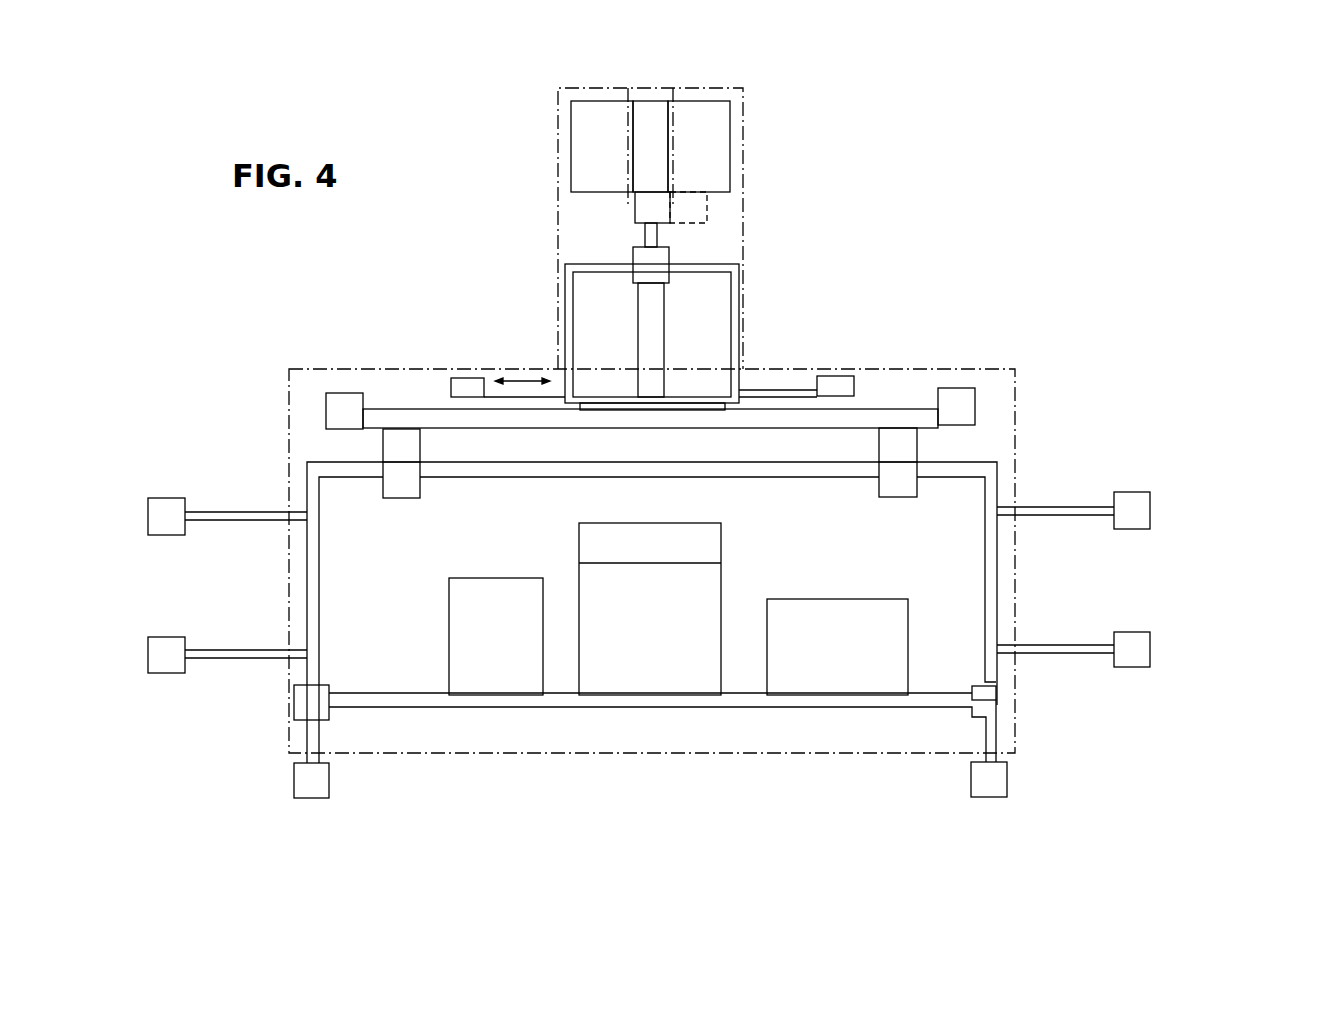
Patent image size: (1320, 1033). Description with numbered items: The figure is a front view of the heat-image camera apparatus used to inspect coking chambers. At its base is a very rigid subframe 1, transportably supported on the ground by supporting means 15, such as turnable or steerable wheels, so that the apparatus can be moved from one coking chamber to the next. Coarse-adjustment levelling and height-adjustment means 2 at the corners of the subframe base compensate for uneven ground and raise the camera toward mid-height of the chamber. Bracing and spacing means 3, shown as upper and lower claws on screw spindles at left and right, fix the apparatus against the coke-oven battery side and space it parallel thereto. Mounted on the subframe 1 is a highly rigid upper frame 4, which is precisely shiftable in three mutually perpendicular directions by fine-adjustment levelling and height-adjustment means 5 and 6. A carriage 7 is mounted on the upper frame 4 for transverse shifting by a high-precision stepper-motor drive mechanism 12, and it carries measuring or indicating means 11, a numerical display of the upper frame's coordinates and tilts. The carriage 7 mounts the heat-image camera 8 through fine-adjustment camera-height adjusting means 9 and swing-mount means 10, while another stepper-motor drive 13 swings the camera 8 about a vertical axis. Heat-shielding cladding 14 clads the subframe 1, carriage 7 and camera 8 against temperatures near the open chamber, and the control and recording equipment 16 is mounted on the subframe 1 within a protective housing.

The subframe 1 is at (988, 587).
The coarse-adjustment levelling and height-adjustment means 2 is at (995, 692).
The bracing and spacing means 3 is at (1142, 510).
The upper frame 4 is at (800, 415).
The fine-adjustment levelling and height-adjustment means 5 is at (907, 485).
The fine-adjustment levelling and height-adjustment means 6 is at (902, 448).
The carriage 7 is at (697, 397).
The heat-image camera 8 is at (710, 168).
The fine-adjustment camera-height adjusting means 9 is at (470, 270).
The swing-mount means 10 is at (658, 217).
The measuring or indicating means 11 is at (848, 372).
The drive mechanism 12 is at (960, 403).
The drive 13 is at (703, 207).
The heat-shielding cladding 14 is at (745, 300).
The supporting means 15 is at (995, 779).
The control and recording equipment 16 is at (470, 617).